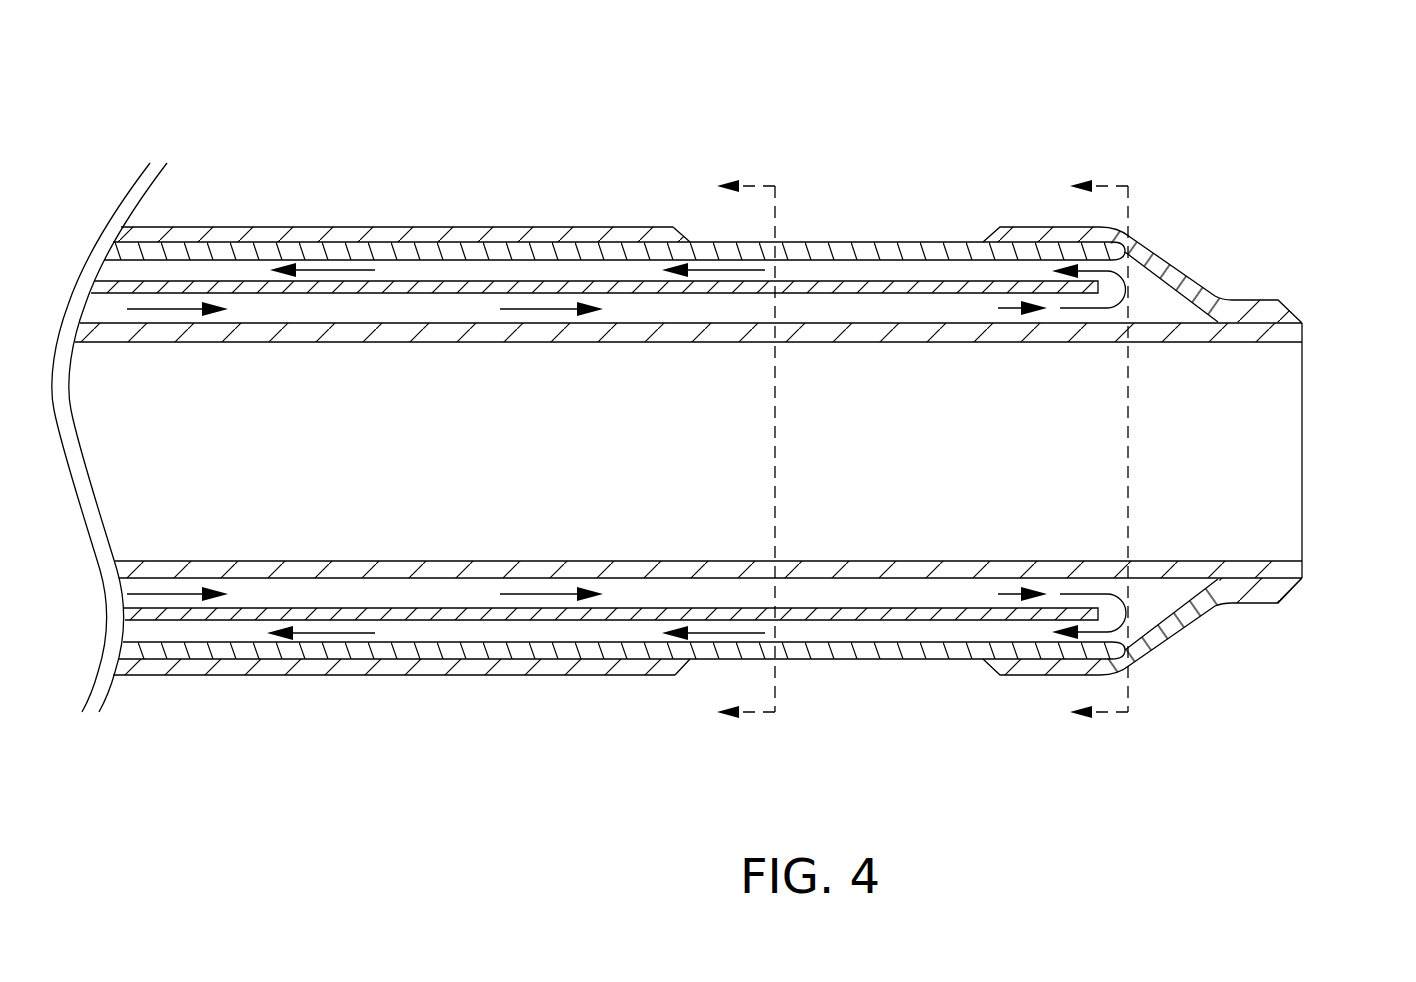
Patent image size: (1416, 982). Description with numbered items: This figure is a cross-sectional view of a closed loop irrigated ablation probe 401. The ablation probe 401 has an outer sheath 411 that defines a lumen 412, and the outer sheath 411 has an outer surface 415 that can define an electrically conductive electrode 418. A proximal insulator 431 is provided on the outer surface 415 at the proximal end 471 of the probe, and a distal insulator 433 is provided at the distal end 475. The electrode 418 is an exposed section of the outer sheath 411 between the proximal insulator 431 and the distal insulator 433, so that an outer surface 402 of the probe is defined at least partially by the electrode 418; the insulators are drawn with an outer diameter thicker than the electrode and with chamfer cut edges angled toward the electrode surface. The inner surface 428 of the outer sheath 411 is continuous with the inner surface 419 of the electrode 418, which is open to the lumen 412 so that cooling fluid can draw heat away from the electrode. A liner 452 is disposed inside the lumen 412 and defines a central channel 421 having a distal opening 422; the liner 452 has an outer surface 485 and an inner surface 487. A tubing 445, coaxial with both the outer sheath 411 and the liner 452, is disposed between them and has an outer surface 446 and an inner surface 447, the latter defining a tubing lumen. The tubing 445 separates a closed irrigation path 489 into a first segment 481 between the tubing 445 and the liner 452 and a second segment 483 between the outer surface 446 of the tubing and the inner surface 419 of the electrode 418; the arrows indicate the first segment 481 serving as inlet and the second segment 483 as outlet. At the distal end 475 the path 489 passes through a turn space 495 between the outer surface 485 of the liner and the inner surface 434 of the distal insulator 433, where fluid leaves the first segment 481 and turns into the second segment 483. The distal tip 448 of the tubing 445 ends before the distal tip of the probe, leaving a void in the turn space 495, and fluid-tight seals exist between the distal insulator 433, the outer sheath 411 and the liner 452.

The ablation probe 401 is at (697, 112).
The proximal end 471 is at (232, 158).
The distal end 475 is at (1252, 130).
The outer sheath 411 is at (530, 253).
The outer surface 402 is at (668, 190).
The outer surface 415 is at (977, 240).
The electrode 418 is at (876, 195).
The proximal insulator 431 is at (297, 237).
The tubing 445 is at (477, 616).
The central channel 421 is at (1290, 497).
The distal opening 422 is at (1335, 370).
The liner 452 is at (187, 332).
The distal tip 448 is at (1115, 266).
The lumen 412 is at (1145, 276).
The distal insulator 433 is at (1212, 292).
The inner surface 434 is at (1190, 301).
The turn space 495 is at (1212, 597).
The outer surface 446 is at (396, 275).
The inner surface 447 is at (458, 298).
The inner surface 428 is at (793, 264).
The inner surface 419 is at (910, 264).
The first segment 481 is at (364, 594).
The second segment 483 is at (860, 636).
The outer surface 485 is at (636, 585).
The inner surface 487 is at (590, 552).
The closed irrigation path 489 is at (1145, 620).